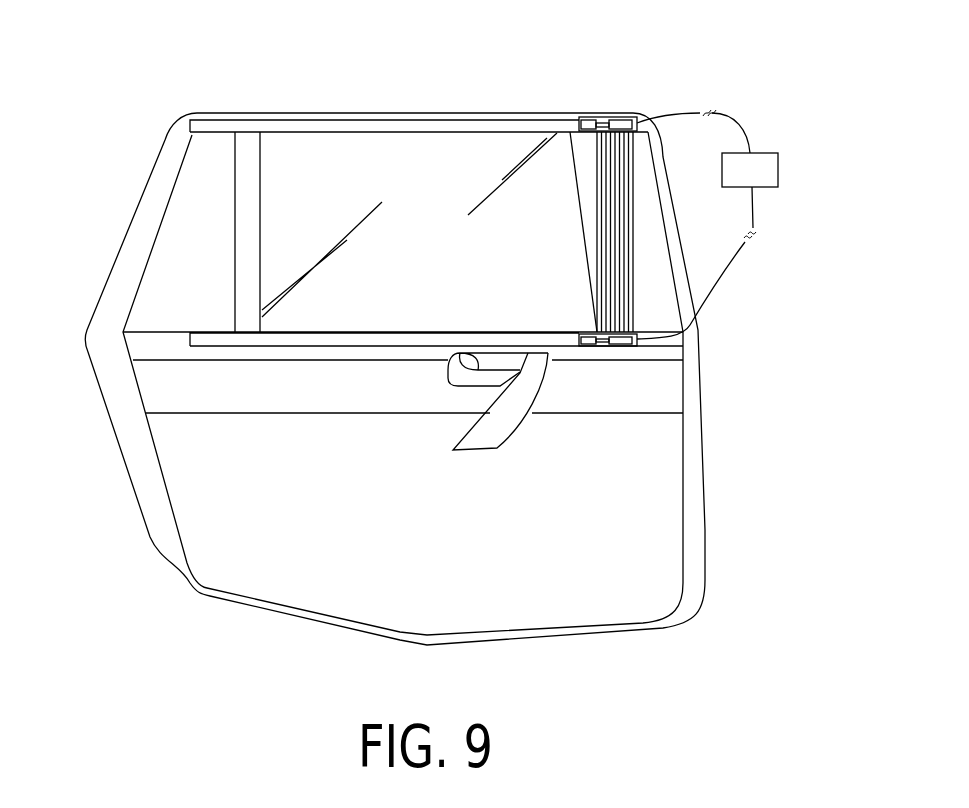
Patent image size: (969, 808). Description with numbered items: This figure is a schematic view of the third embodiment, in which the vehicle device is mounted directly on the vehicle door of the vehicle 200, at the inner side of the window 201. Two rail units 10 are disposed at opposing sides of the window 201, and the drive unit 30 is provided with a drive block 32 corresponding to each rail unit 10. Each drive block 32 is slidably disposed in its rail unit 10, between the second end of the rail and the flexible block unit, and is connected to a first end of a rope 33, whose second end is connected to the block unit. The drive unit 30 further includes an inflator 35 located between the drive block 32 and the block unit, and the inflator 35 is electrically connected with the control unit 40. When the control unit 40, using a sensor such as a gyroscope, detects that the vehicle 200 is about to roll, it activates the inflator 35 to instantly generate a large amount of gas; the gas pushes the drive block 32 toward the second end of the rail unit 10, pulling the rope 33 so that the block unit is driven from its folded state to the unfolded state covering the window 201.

The vehicle 200 is at (172, 121).
The window 201 is at (310, 148).
The rail unit 10 is at (373, 128).
The drive unit 30 is at (628, 118).
The drive block 32 is at (582, 122).
The rope 33 is at (602, 122).
The inflator 35 is at (615, 120).
The control unit 40 is at (765, 153).